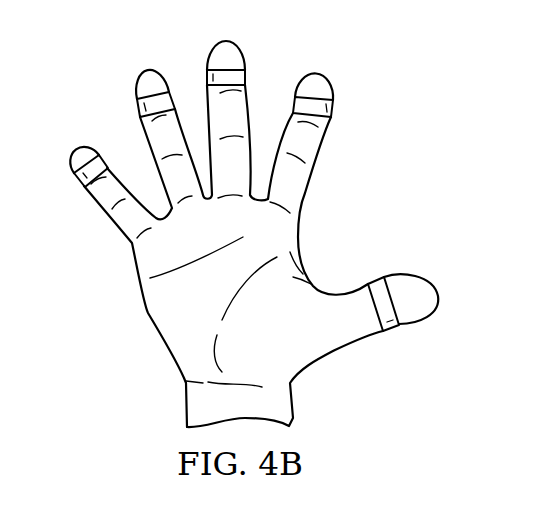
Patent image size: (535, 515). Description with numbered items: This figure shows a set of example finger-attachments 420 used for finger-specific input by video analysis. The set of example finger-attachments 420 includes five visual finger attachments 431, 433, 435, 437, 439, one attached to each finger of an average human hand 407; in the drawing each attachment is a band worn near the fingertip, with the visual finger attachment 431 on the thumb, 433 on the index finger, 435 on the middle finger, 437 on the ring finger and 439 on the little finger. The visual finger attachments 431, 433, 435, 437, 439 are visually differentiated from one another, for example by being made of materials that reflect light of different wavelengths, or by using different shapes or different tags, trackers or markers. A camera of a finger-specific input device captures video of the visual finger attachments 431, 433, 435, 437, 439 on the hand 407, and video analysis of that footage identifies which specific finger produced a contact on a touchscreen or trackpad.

The set of example finger-attachments 420 is at (364, 59).
The average human hand 407 is at (147, 321).
The visual finger attachment 431 is at (392, 332).
The visual finger attachment 433 is at (334, 111).
The visual finger attachment 435 is at (246, 80).
The visual finger attachment 437 is at (136, 104).
The visual finger attachment 439 is at (77, 178).